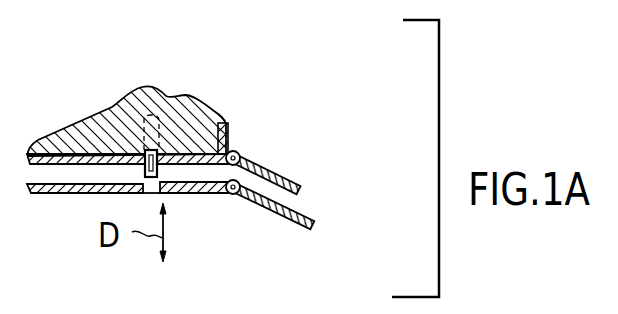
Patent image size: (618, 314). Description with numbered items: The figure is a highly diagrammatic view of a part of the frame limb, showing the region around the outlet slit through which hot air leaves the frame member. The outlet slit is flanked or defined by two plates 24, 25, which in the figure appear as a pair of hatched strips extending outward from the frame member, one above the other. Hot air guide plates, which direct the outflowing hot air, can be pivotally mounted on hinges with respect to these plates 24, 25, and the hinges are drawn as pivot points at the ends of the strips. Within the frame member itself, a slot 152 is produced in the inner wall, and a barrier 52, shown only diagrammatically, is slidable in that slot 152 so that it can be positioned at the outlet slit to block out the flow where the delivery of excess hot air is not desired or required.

The slot 152 is at (165, 108).
The barrier 52 is at (154, 152).
The plate 24 is at (299, 178).
The plate 25 is at (283, 217).